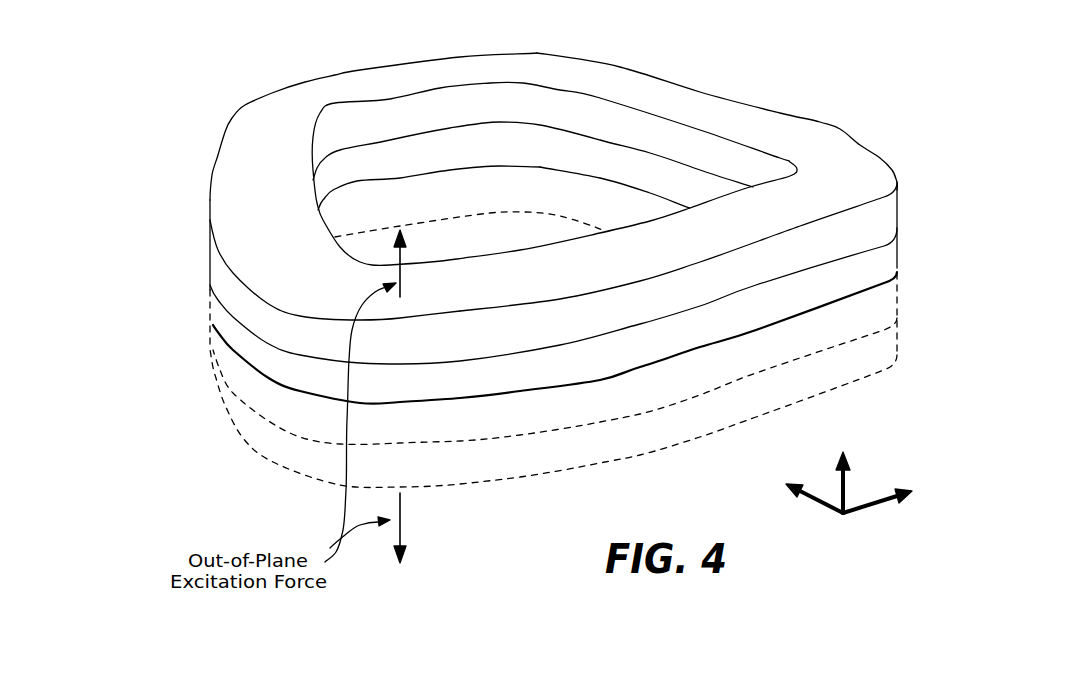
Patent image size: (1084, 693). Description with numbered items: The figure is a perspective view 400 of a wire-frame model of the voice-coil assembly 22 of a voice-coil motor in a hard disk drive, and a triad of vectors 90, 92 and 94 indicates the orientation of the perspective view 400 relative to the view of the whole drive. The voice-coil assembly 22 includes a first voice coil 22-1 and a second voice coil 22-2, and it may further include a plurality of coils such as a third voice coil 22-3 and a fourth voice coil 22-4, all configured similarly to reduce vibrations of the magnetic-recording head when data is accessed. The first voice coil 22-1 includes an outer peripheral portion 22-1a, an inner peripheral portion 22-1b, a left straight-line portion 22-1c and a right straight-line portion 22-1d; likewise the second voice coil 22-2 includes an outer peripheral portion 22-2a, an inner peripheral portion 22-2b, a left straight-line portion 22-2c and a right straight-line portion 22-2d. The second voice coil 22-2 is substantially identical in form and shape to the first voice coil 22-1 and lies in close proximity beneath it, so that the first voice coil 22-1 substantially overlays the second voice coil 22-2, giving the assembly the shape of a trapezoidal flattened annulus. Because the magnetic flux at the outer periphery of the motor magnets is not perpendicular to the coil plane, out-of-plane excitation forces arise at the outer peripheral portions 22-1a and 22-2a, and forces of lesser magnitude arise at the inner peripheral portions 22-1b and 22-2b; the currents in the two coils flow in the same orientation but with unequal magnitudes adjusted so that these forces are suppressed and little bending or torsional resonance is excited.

The perspective view 400 is at (481, 270).
The voice-coil assembly 22 is at (481, 270).
The first voice coil 22-1 is at (513, 199).
The second voice coil 22-2 is at (514, 270).
The third voice coil 22-3 is at (226, 372).
The fourth voice coil 22-4 is at (124, 289).
The outer peripheral portion 22-1a is at (640, 253).
The inner peripheral portion 22-1b is at (362, 87).
The left straight-line portion 22-1c is at (230, 210).
The right straight-line portion 22-1d is at (603, 80).
The outer peripheral portion 22-2a is at (717, 325).
The inner peripheral portion 22-2b is at (433, 156).
The left straight-line portion 22-2c is at (263, 320).
The right straight-line portion 22-2d is at (600, 163).
The vector of triad 90 is at (878, 503).
The vector of triad 92 is at (822, 507).
The vector of triad 94 is at (850, 493).